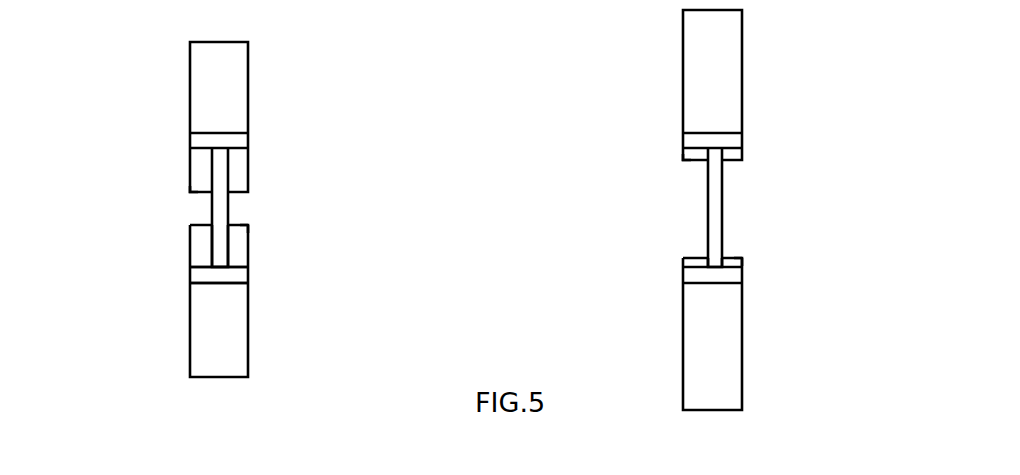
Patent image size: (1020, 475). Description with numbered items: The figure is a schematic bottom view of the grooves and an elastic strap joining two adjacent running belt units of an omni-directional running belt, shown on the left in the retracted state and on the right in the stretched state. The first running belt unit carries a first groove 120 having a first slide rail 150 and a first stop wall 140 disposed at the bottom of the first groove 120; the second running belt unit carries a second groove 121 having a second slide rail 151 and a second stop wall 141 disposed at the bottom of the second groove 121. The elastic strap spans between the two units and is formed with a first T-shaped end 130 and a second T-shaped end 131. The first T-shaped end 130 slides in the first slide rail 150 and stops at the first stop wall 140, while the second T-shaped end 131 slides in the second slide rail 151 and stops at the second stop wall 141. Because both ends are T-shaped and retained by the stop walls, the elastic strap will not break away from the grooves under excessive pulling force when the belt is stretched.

The first groove 120 is at (230, 76).
The second groove 121 is at (220, 344).
The first T-shaped end 130 is at (225, 158).
The second T-shaped end 131 is at (218, 258).
The first stop wall 140 is at (386, 155).
The second stop wall 141 is at (593, 244).
The first slide rail 150 is at (235, 183).
The second slide rail 151 is at (248, 296).